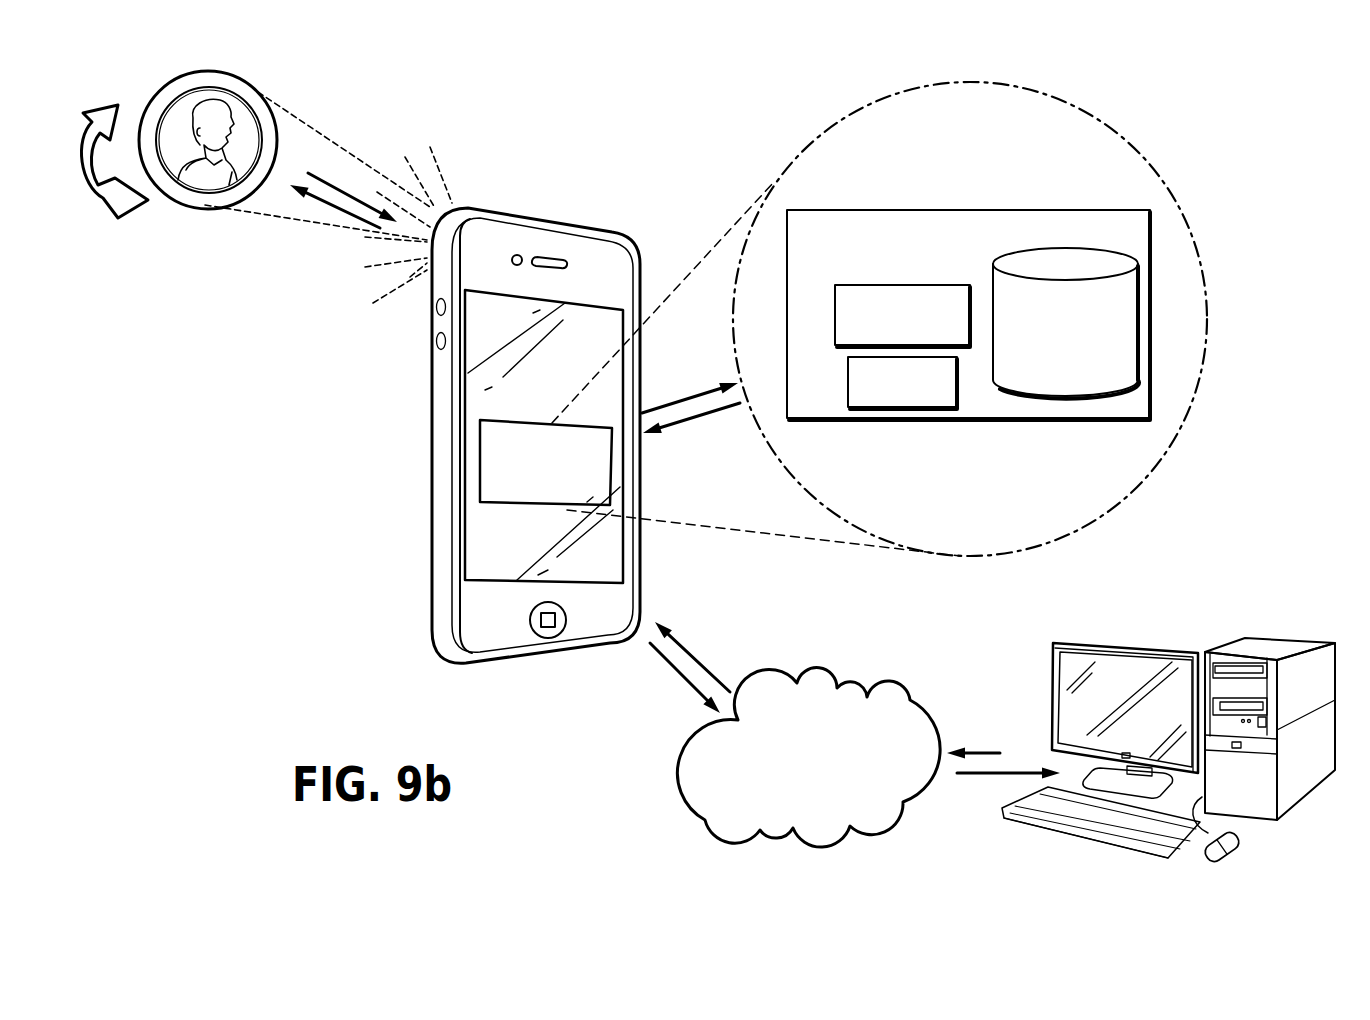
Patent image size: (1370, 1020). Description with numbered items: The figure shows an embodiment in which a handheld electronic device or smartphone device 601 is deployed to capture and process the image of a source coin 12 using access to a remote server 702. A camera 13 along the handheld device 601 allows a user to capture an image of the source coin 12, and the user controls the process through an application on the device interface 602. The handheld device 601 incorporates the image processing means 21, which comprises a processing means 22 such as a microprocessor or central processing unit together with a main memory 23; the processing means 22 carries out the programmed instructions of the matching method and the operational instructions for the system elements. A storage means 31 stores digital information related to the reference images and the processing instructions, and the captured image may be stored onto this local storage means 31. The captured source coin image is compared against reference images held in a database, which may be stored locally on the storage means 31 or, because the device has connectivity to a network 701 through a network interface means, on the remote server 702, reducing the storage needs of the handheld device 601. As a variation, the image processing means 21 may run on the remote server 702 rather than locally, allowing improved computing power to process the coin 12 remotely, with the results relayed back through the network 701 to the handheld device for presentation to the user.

The source coin 12 is at (237, 72).
The camera 13 is at (435, 163).
The handheld electronic device 601 is at (502, 396).
The device interface 602 is at (483, 401).
The image processing means 21 is at (1150, 297).
The processing means 22 is at (903, 409).
The main memory 23 is at (835, 312).
The storage means 31 is at (1123, 372).
The network 701 is at (910, 687).
The remote server 702 is at (1230, 648).